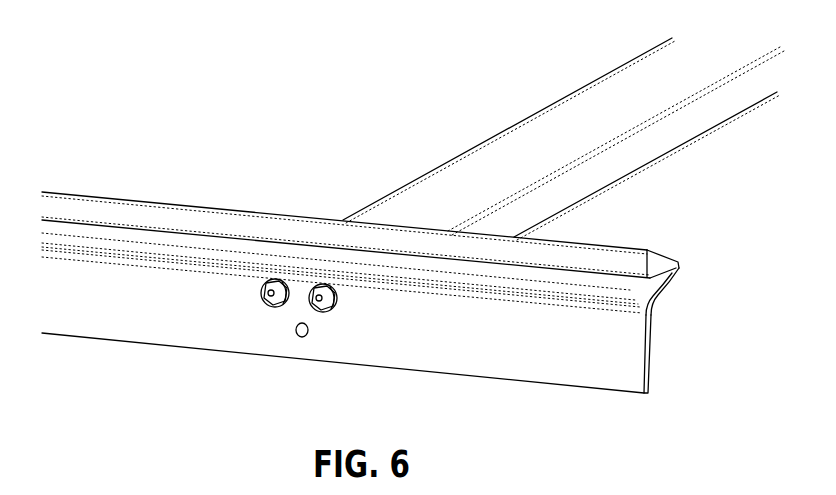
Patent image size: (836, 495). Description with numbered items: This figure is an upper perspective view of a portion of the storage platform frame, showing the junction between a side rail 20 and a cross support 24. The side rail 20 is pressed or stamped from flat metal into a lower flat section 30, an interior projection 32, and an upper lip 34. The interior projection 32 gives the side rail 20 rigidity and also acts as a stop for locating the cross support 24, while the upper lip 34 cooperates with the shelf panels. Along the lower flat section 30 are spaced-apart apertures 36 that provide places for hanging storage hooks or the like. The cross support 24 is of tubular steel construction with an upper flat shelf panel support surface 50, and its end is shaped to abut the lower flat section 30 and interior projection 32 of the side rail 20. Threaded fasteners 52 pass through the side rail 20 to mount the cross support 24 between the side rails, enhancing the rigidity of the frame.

The side rail 20 is at (158, 305).
The cross support 24 is at (393, 170).
The lower flat section 30 is at (630, 345).
The interior projection 32 is at (671, 291).
The upper lip 34 is at (140, 199).
The aperture 36 is at (307, 336).
The upper flat shelf panel support surface 50 is at (567, 125).
The threaded fastener 52 is at (261, 303).